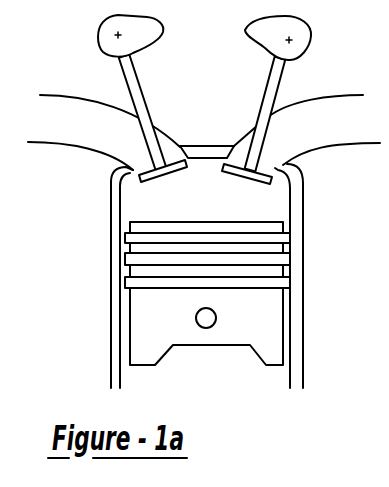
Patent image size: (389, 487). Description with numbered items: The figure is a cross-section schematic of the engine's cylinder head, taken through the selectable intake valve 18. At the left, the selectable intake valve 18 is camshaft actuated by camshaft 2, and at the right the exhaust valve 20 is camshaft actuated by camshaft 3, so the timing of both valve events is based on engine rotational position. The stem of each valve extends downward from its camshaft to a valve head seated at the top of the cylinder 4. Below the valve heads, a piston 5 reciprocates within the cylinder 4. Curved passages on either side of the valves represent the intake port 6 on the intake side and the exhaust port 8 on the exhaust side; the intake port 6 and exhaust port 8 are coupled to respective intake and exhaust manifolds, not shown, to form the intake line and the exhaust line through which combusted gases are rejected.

The camshaft 2 is at (100, 32).
The camshaft 3 is at (300, 16).
The cylinder 4 is at (110, 290).
The piston 5 is at (264, 324).
The intake port 6 is at (83, 147).
The exhaust port 8 is at (330, 146).
The selectable intake valve 18 is at (142, 114).
The exhaust valve 20 is at (259, 108).